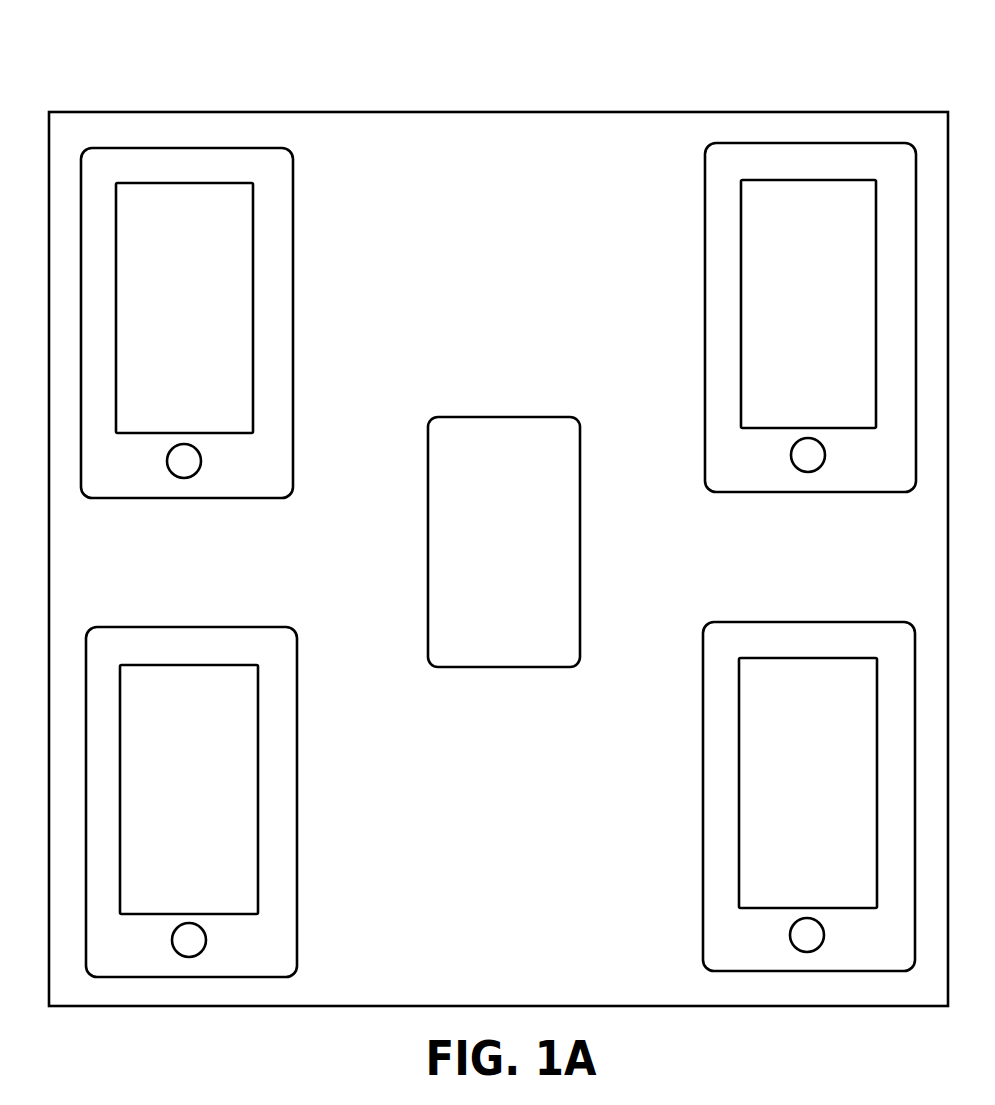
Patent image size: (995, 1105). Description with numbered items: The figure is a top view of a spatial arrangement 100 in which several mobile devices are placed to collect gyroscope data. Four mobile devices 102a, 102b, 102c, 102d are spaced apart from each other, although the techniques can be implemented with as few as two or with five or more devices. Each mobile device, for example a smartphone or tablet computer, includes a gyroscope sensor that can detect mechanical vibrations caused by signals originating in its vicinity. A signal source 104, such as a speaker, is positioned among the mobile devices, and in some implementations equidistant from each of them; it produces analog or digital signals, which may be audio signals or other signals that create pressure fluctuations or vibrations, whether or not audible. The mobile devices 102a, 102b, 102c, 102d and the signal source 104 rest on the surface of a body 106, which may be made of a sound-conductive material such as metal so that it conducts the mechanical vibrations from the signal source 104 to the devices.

The spatial arrangement 100 is at (178, 86).
The mobile device 102a is at (294, 224).
The mobile device 102b is at (704, 208).
The mobile device 102c is at (298, 846).
The mobile device 102d is at (702, 807).
The signal source 104 is at (531, 514).
The body 106 is at (648, 1008).